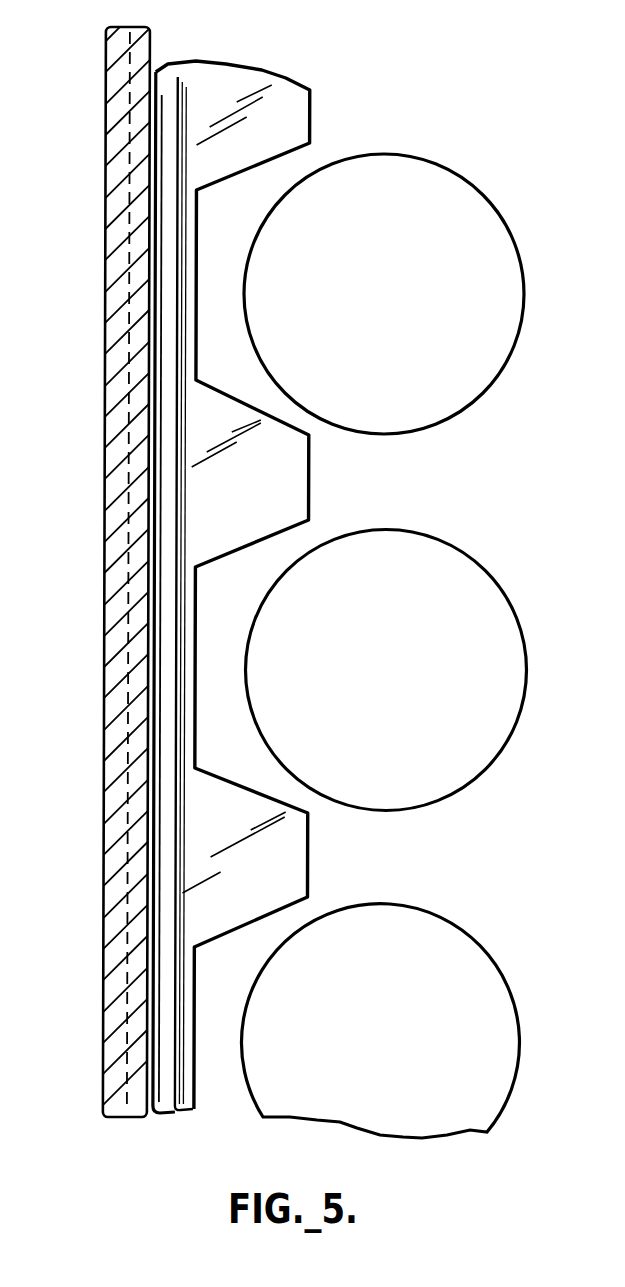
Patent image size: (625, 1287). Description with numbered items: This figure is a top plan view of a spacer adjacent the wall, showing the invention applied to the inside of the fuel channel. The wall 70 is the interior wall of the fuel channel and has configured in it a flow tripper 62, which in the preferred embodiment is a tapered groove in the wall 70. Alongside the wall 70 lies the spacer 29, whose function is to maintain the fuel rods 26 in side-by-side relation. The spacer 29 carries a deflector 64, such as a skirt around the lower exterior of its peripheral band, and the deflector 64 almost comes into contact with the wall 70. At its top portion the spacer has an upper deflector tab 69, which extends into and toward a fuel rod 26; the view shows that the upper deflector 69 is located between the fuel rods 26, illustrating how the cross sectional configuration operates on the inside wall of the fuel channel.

The fuel rod 26 is at (364, 310).
The spacer 29 is at (178, 461).
The flow tripper 62 is at (128, 852).
The deflector 64 is at (160, 989).
The deflector tab 69 is at (238, 500).
The wall 70 is at (105, 549).